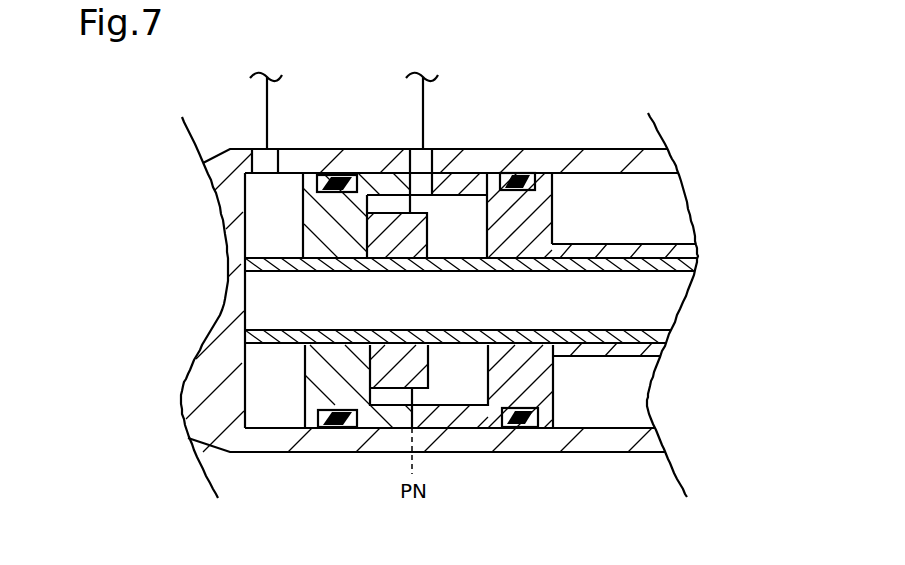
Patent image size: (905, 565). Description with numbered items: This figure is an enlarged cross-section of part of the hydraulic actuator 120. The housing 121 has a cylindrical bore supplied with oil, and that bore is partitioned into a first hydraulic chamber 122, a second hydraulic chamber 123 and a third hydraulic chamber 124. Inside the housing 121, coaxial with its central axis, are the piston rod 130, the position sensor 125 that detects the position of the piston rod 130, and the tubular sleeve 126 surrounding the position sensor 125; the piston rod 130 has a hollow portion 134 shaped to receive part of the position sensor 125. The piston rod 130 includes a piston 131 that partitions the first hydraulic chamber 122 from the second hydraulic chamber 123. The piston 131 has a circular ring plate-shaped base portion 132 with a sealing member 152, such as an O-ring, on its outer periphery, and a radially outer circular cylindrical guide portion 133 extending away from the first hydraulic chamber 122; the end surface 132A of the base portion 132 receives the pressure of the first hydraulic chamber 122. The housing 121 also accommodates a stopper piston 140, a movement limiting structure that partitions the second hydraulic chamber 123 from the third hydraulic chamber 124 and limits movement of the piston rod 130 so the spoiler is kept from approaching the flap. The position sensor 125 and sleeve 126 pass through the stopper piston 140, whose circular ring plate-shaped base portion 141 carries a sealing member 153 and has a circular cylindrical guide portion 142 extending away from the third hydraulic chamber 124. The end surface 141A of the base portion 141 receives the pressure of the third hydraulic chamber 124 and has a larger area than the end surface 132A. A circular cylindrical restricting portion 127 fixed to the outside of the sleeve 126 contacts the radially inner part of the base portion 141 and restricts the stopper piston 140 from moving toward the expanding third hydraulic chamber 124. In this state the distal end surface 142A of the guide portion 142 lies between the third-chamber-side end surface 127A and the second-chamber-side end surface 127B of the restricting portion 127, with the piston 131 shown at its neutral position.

The hydraulic actuator 120 is at (187, 93).
The housing 121 is at (600, 452).
The first hydraulic chamber 122 is at (650, 381).
The second hydraulic chamber 123 is at (466, 432).
The third hydraulic chamber 124 is at (248, 353).
The position sensor 125 is at (673, 320).
The sleeve 126 is at (590, 344).
The restricting portion 127 is at (414, 270).
The end surface of restricting portion 127A is at (370, 367).
The end surface of restricting portion 127B is at (428, 247).
The piston rod 130 is at (686, 230).
The piston 131 is at (463, 101).
The base portion 132 is at (543, 195).
The end surface 132A is at (553, 210).
The guide portion 133 is at (480, 178).
The hollow portion 134 is at (666, 256).
The stopper piston 140 is at (298, 101).
The base portion 141 is at (307, 207).
The end surface 141A is at (303, 408).
The guide portion 142 is at (388, 182).
The distal end surface 142A is at (428, 416).
The sealing member 152 is at (513, 430).
The sealing member 153 is at (333, 430).